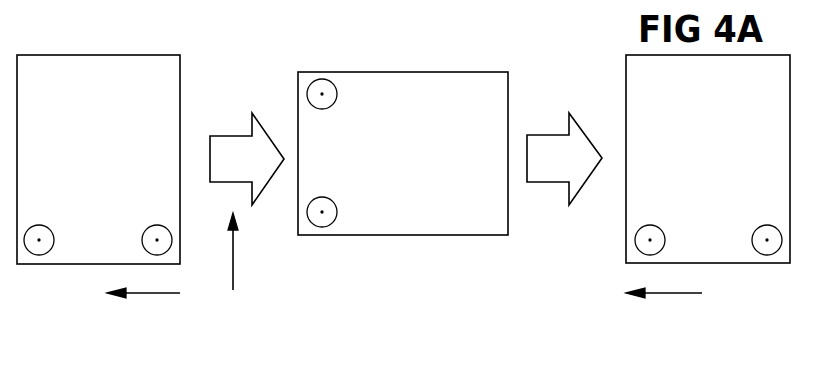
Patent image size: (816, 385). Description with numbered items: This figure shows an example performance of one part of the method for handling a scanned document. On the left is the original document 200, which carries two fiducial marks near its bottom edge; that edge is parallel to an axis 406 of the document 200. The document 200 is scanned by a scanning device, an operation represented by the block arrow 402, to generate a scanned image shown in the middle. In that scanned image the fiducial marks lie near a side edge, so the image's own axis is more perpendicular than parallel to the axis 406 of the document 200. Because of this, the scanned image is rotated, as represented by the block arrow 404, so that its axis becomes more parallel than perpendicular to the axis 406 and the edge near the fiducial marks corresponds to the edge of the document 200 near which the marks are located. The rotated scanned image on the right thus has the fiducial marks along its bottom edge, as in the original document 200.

The original document 200 is at (98, 159).
The arrow representing scanning 402 is at (225, 135).
The arrow representing rotation 404 is at (545, 135).
The axis of the document 406 is at (142, 295).